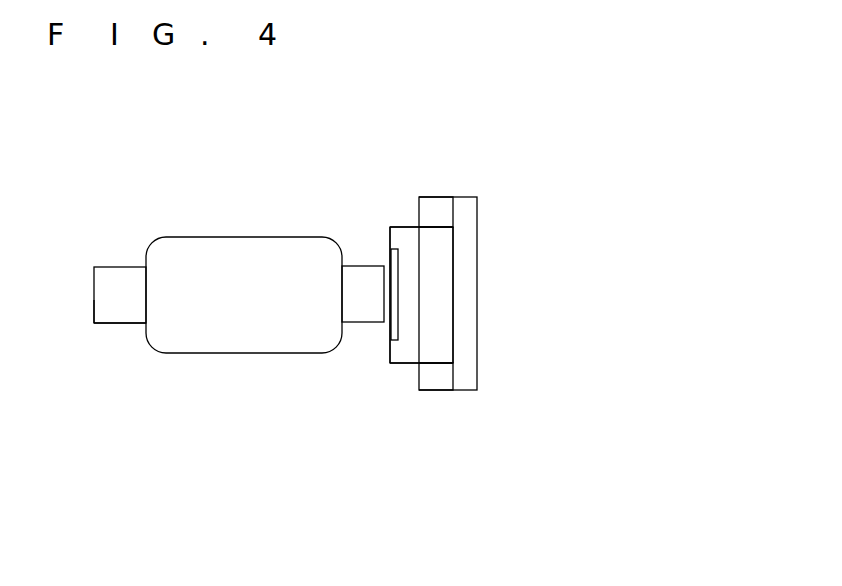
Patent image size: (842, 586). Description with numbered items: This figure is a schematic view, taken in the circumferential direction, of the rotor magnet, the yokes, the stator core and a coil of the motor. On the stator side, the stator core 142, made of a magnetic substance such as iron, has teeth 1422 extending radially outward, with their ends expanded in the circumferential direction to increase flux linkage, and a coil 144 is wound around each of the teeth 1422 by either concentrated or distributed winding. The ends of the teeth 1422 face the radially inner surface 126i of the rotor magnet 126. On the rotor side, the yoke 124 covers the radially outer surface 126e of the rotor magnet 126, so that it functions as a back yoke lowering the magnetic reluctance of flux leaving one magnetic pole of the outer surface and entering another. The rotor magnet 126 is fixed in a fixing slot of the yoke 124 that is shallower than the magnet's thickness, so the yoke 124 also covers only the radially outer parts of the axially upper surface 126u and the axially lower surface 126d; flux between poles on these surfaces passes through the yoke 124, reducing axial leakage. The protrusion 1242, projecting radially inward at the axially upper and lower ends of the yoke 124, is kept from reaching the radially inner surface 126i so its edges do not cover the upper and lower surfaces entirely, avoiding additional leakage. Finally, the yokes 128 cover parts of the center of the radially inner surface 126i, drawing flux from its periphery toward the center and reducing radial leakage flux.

The yoke 124 is at (465, 298).
The protrusion 1242 is at (442, 212).
The rotor magnet 126 is at (412, 353).
The radially inner surface 126i is at (390, 238).
The axially upper surface 126u is at (432, 223).
The radially outer surface 126e is at (453, 252).
The axially lower surface 126d is at (445, 365).
The yoke 128 is at (390, 330).
The stator core 142 is at (112, 280).
The teeth 1422 is at (113, 308).
The coil 144 is at (200, 340).